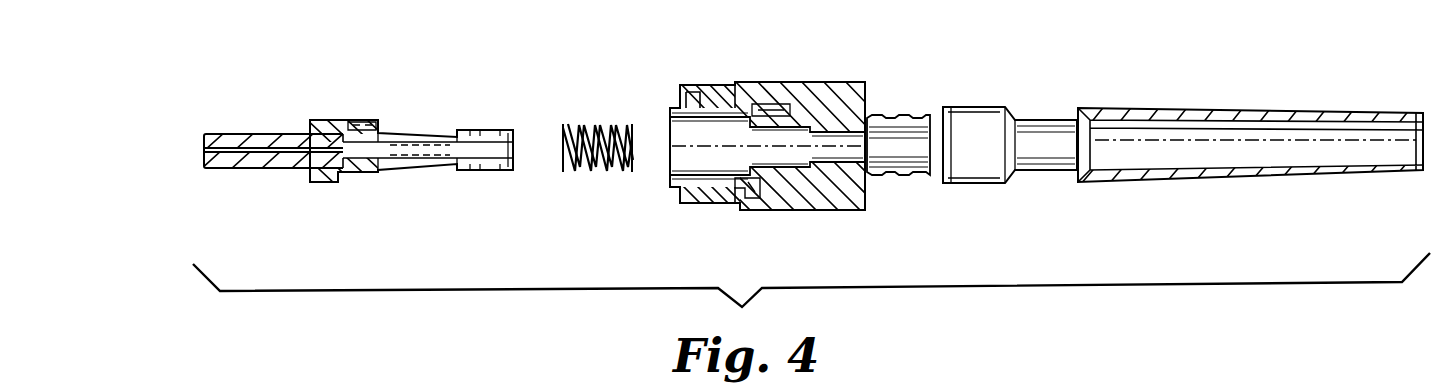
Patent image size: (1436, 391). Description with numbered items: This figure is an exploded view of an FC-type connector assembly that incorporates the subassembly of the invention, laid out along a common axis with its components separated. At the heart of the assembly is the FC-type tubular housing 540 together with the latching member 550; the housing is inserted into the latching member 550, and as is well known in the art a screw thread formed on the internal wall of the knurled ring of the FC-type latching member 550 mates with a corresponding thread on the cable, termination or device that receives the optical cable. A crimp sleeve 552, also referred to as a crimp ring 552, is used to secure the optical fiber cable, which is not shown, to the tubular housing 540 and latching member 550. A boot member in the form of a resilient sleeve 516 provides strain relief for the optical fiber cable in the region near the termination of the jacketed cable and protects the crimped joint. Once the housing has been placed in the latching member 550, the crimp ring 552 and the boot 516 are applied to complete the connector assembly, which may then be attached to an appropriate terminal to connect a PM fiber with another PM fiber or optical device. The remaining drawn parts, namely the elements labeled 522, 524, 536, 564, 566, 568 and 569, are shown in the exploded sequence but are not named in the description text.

The resilient sleeve 516 is at (1158, 116).
The tube 522 is at (238, 133).
The hub 524 is at (325, 110).
The spring 536 is at (563, 128).
The FC-type tubular housing 540 is at (906, 110).
The latching member 550 is at (827, 92).
The crimp sleeve 552 is at (1012, 118).
The ridge 564 is at (363, 121).
The seal groove 566 is at (769, 115).
The notch 568 is at (767, 180).
The nut 569 is at (702, 93).